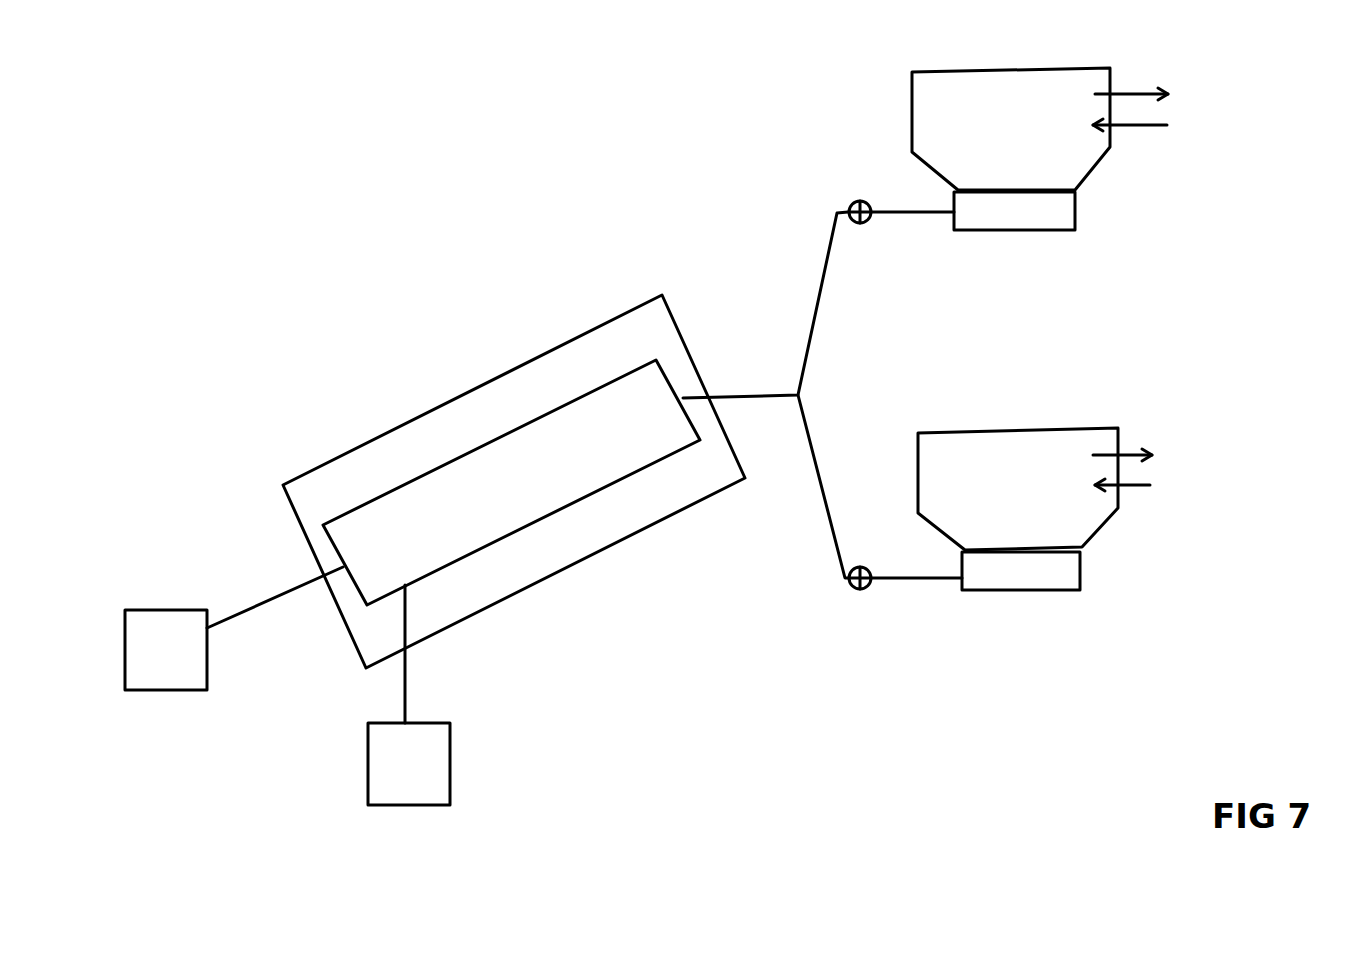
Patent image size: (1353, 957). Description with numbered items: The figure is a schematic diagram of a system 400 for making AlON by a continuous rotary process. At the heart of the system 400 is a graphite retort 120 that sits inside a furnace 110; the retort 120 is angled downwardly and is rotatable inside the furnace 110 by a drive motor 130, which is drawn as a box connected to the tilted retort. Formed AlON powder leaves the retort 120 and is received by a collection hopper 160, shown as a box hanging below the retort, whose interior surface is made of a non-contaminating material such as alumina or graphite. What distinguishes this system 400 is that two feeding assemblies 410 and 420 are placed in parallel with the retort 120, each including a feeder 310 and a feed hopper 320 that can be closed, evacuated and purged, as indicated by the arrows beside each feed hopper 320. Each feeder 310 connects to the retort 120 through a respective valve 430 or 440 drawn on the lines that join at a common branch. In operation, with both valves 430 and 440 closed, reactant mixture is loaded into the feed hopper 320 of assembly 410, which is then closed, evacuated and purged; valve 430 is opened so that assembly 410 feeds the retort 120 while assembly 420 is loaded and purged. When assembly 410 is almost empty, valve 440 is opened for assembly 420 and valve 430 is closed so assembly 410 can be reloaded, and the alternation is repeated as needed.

The system 400 is at (540, 80).
The furnace 110 is at (450, 400).
The retort 120 is at (542, 518).
The drive motor 130 is at (167, 682).
The collection hopper 160 is at (450, 742).
The feeder 310 is at (1077, 212).
The feed hopper 320 is at (912, 115).
The feeding assembly 410 is at (1150, 44).
The feeding assembly 420 is at (1158, 394).
The valve 430 is at (860, 223).
The valve 440 is at (860, 589).